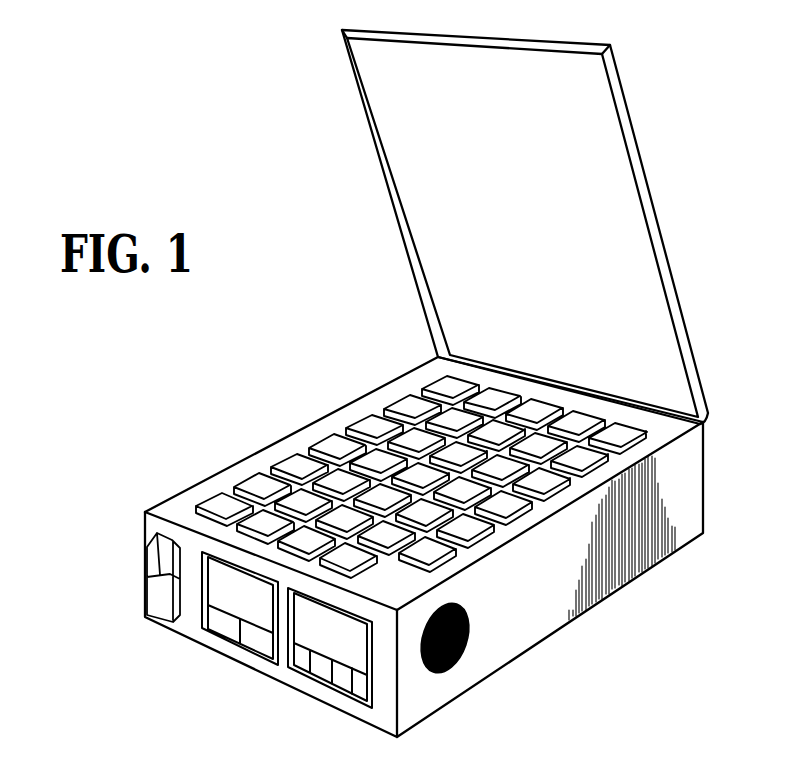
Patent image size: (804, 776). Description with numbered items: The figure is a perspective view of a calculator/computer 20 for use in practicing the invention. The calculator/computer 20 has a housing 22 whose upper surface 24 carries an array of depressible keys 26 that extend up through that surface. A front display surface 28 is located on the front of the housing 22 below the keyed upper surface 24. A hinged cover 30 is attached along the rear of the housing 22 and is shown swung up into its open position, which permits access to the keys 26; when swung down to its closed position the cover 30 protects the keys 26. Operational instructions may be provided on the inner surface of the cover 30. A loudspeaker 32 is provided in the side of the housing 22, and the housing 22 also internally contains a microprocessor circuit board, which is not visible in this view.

The calculator/computer 20 is at (122, 431).
The housing 22 is at (632, 567).
The upper surface 24 is at (340, 423).
The depressible keys 26 is at (584, 460).
The front display surface 28 is at (383, 708).
The hinged cover 30 is at (643, 200).
The loudspeaker 32 is at (458, 660).